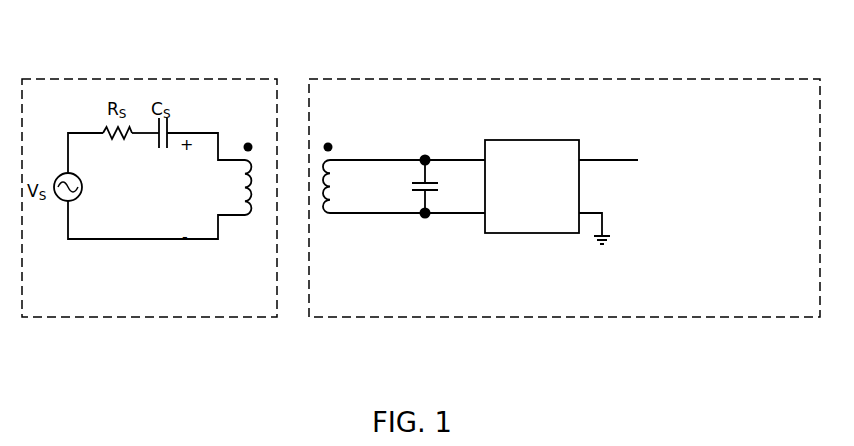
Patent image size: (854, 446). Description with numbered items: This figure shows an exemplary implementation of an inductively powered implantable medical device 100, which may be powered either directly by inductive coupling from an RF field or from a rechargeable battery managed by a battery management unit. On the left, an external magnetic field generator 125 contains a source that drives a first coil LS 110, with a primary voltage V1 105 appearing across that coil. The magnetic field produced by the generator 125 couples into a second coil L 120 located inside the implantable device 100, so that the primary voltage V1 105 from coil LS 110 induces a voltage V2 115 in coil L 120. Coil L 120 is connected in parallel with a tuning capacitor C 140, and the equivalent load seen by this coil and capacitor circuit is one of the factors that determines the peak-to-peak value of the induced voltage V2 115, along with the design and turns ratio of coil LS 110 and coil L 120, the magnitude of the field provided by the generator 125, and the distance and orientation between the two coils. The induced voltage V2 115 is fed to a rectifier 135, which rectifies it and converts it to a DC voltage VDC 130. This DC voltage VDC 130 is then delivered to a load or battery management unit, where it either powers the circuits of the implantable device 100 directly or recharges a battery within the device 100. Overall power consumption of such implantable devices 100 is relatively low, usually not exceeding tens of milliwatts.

The inductively powered implantable medical device 100 is at (763, 75).
The primary voltage V1 105 is at (175, 185).
The first coil LS 110 is at (240, 220).
The induced voltage V2 115 is at (393, 197).
The second coil L 120 is at (327, 218).
The external magnetic field generator 125 is at (68, 75).
The DC voltage VDC 130 is at (598, 132).
The rectifier 135 is at (527, 140).
The tuning capacitor C 140 is at (433, 193).